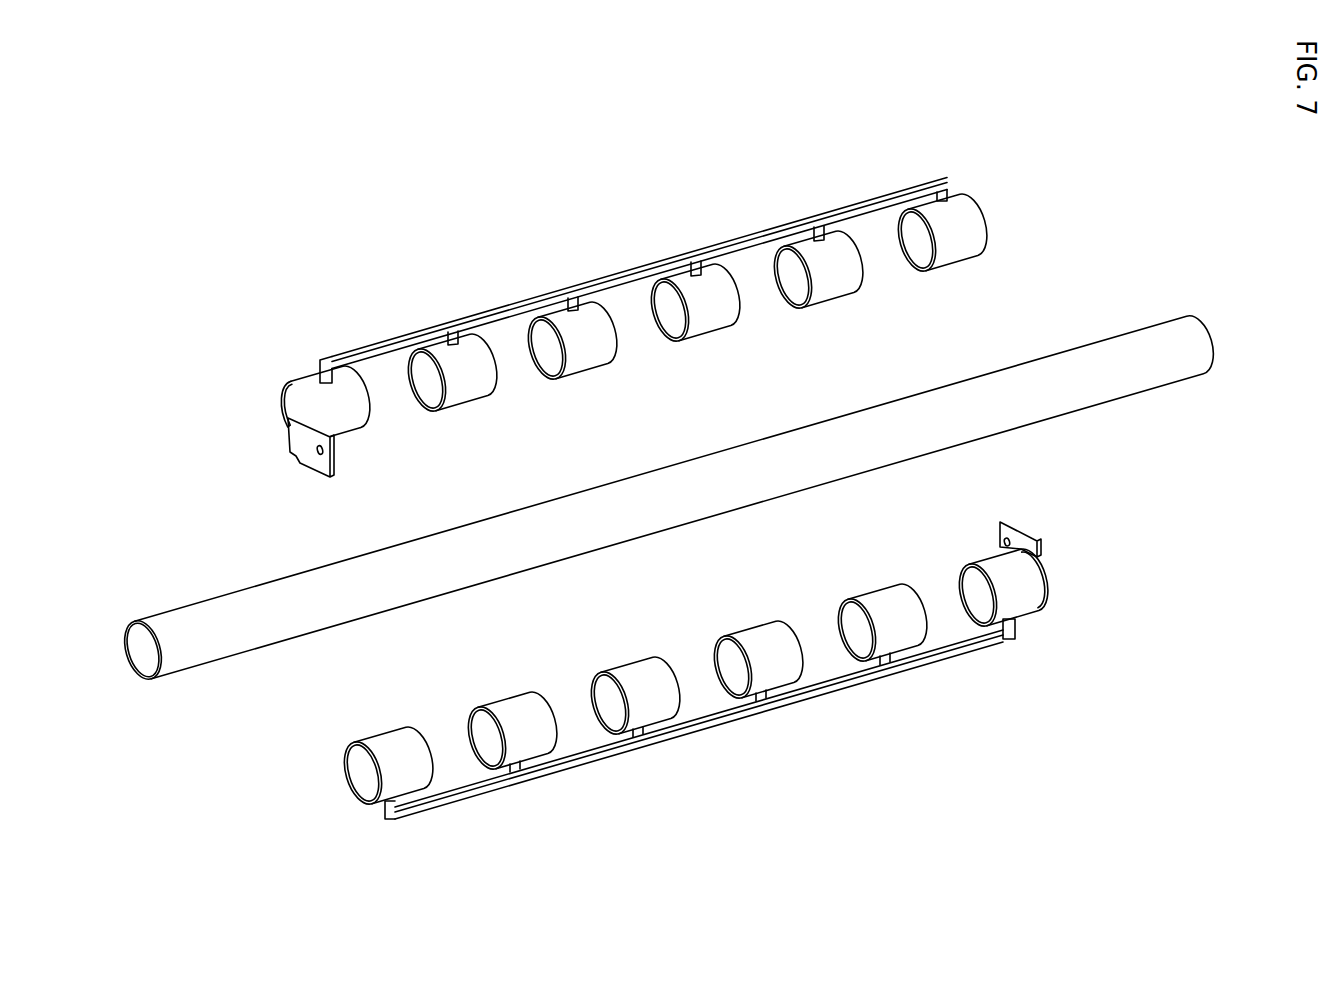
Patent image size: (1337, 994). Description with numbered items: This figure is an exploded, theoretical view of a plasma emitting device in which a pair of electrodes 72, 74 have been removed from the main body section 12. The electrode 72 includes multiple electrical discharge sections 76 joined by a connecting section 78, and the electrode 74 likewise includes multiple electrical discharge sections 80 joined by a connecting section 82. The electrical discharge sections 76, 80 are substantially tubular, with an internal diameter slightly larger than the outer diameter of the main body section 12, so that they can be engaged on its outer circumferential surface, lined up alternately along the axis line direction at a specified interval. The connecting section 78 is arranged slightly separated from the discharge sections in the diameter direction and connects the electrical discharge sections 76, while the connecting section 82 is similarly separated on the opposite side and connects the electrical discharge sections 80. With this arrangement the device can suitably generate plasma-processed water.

The main body section 12 is at (1192, 445).
The electrode 72 is at (626, 297).
The electrode 74 is at (693, 677).
The electrical discharge sections 76 is at (297, 287).
The connecting section 78 is at (870, 197).
The electrical discharge sections 80 is at (922, 760).
The connecting section 82 is at (973, 693).